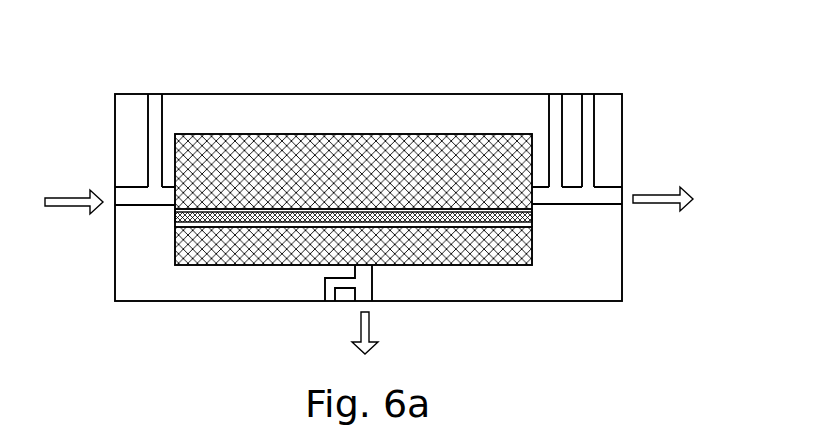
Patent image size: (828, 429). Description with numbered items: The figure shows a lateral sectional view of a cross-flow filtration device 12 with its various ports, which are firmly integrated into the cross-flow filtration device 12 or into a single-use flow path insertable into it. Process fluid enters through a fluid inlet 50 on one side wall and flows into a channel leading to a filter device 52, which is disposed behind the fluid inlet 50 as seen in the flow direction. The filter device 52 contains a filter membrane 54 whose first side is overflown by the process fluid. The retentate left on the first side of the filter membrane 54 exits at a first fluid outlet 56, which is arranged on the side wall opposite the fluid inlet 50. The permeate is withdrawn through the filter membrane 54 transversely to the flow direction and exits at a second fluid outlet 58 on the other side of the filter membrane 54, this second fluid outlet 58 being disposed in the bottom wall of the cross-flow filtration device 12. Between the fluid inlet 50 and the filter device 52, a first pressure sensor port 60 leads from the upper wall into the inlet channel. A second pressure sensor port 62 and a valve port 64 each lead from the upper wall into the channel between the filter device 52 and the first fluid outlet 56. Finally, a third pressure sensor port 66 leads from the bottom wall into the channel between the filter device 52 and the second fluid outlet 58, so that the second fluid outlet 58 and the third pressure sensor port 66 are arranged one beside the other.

The cross-flow filtration device 12 is at (203, 69).
The fluid inlet 50 is at (112, 207).
The filter device 52 is at (344, 133).
The filter membrane 54 is at (533, 217).
The first fluid outlet 56 is at (624, 190).
The second fluid outlet 58 is at (365, 293).
The first pressure sensor port 60 is at (153, 141).
The second pressure sensor port 62 is at (556, 92).
The valve port 64 is at (587, 92).
The third pressure sensor port 66 is at (330, 295).